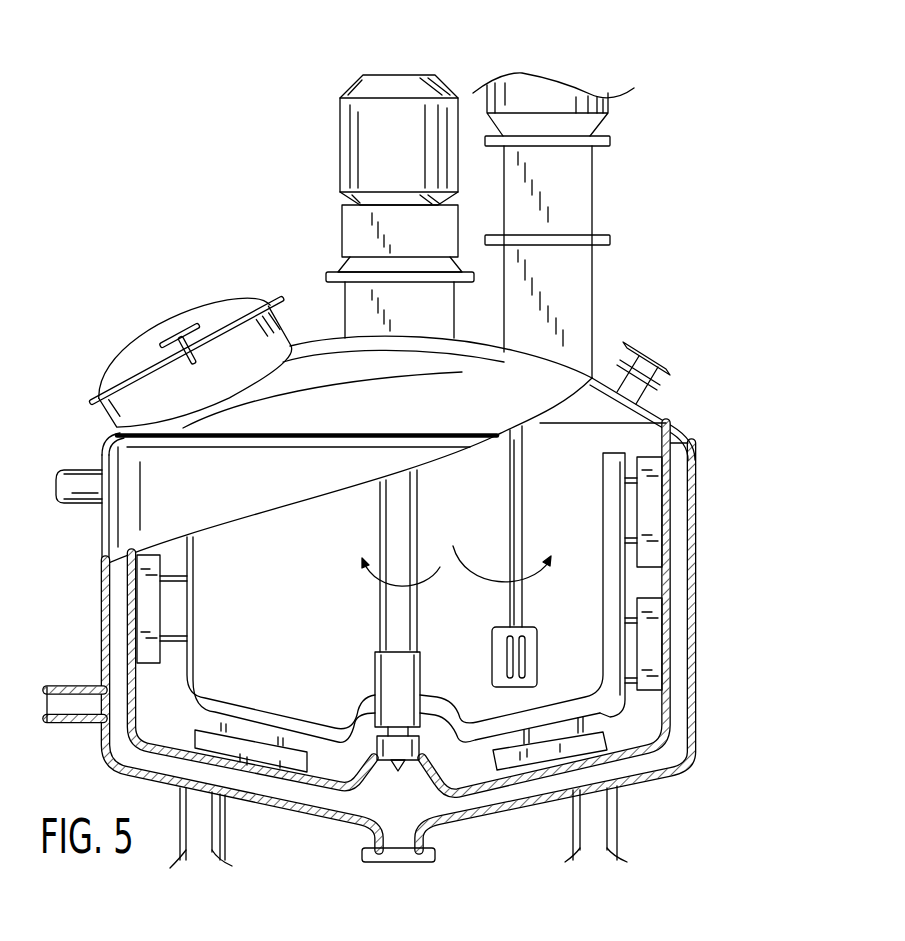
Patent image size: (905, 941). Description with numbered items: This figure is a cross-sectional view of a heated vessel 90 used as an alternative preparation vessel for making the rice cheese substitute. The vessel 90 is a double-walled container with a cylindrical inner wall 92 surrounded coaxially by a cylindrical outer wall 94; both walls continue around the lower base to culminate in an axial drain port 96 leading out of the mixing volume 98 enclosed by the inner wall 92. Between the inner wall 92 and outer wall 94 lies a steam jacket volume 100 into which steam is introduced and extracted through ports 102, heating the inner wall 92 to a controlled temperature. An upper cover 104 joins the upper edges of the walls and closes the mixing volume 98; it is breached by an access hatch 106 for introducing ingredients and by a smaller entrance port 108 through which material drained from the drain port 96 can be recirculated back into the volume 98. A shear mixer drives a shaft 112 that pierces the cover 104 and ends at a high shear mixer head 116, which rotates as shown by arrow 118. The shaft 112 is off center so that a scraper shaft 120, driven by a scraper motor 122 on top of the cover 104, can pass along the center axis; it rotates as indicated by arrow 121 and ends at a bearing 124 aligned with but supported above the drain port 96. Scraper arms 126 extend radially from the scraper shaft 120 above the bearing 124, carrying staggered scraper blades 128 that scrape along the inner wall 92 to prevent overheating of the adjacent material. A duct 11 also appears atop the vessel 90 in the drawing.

The vent duct 11 is at (612, 108).
The heated vessel 90 is at (738, 318).
The inner wall 92 is at (697, 447).
The outer wall 94 is at (697, 507).
The drain port 96 is at (425, 825).
The mixing volume 98 is at (294, 593).
The steam jacket volume 100 is at (680, 697).
The ports 102 is at (80, 506).
The upper cover 104 is at (670, 407).
The access hatch 106 is at (283, 322).
The entrance port 108 is at (667, 358).
The shaft 112 is at (510, 512).
The high shear mixer head 116 is at (494, 627).
The arrow 118 is at (499, 549).
The scraper shaft 120 is at (393, 520).
The arrow 121 is at (375, 585).
The scraper motor 122 is at (340, 133).
The bearing 124 is at (385, 762).
The scraper arms 126 is at (230, 712).
The scraper blades 128 is at (660, 612).